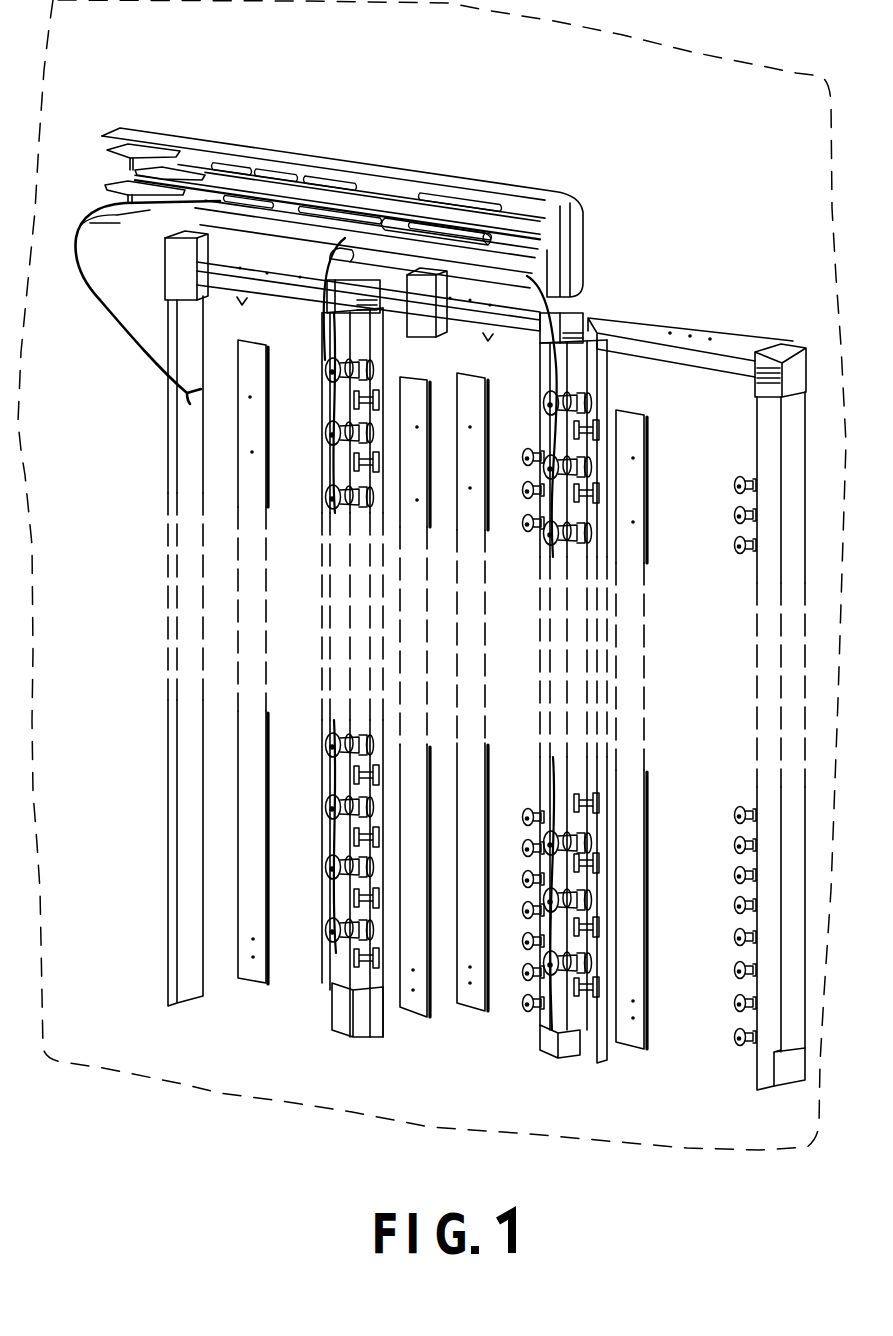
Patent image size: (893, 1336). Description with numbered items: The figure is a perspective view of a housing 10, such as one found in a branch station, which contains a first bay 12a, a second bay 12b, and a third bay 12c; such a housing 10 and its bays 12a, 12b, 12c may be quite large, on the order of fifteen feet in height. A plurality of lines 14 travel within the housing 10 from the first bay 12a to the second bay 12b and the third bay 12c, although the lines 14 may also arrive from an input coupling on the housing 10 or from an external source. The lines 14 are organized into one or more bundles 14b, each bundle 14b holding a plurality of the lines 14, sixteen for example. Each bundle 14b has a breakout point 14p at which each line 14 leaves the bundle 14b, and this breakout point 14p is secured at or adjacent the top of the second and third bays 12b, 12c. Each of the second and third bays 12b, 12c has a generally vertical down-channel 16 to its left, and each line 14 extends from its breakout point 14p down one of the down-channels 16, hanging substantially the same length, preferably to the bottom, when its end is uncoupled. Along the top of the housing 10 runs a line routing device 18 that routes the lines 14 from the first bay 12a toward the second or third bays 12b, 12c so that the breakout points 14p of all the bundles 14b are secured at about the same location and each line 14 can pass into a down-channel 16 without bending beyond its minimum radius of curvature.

The housing 10 is at (436, 85).
The line routing device 18 is at (498, 181).
The breakout point 14p is at (160, 208).
The bundle 14b is at (97, 297).
The line 14 is at (307, 864).
The first bay 12a is at (258, 1010).
The second bay 12b is at (323, 1033).
The third bay 12c is at (755, 1097).
The down-channel 16 is at (361, 1032).